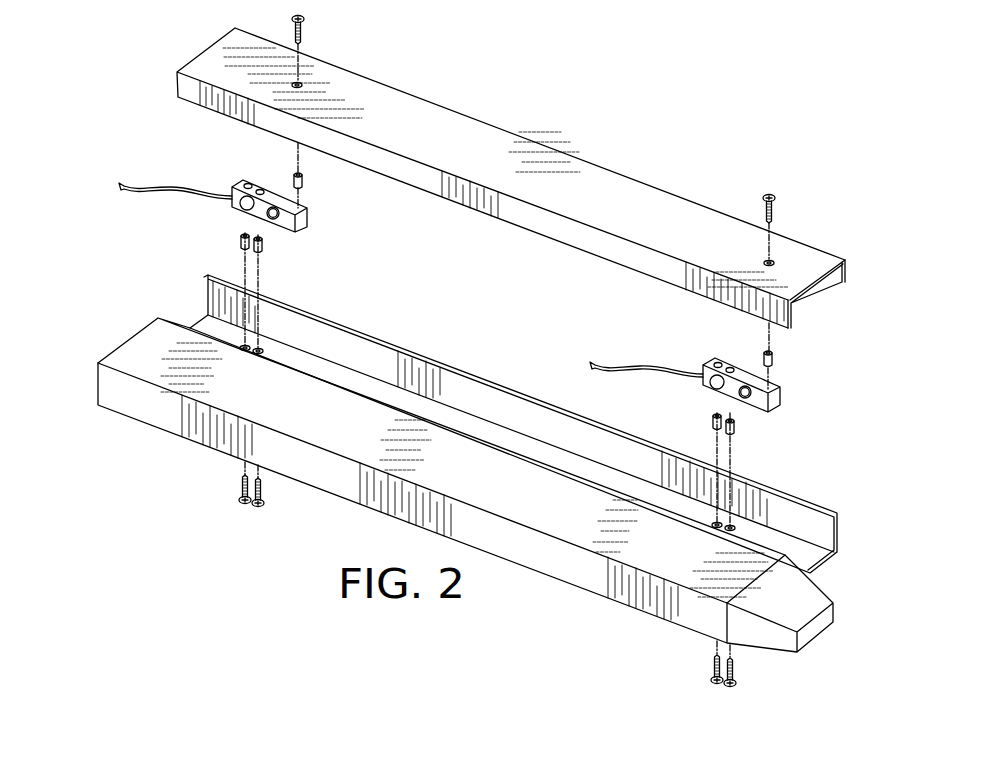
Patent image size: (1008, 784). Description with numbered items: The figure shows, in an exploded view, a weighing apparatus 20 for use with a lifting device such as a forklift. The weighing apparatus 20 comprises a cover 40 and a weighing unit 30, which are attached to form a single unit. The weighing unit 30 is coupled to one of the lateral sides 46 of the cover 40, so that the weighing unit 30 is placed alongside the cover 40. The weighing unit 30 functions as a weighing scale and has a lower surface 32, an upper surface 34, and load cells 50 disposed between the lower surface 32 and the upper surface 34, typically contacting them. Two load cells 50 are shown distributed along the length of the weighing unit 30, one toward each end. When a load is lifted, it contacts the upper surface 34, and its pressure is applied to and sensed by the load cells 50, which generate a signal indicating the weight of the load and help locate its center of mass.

The weighing apparatus 20 is at (180, 127).
The weighing unit 30 is at (440, 200).
The lower surface 32 is at (808, 556).
The upper surface 34 is at (612, 180).
The cover 40 is at (326, 509).
The lateral side 46 is at (172, 319).
The load cell 50 is at (226, 220).